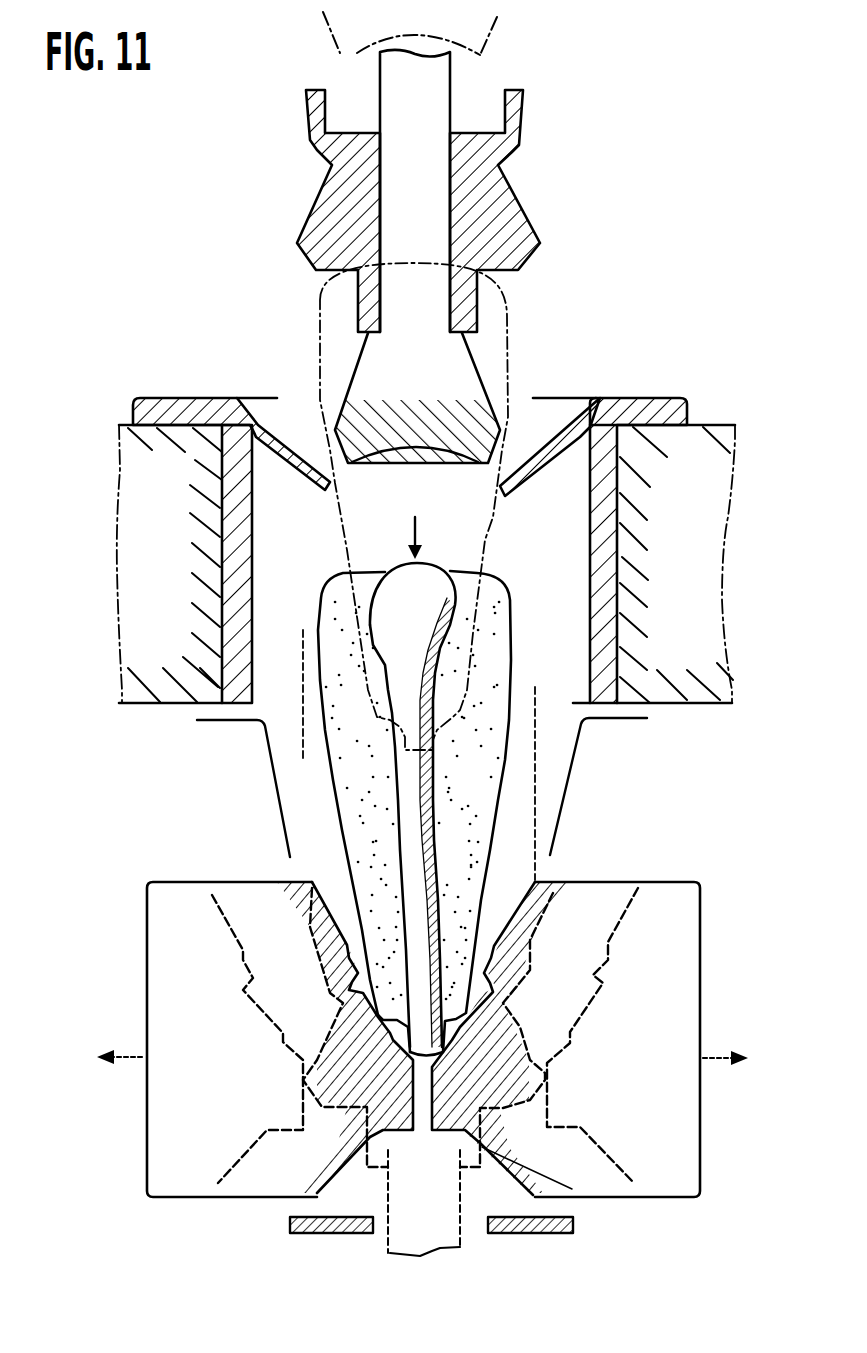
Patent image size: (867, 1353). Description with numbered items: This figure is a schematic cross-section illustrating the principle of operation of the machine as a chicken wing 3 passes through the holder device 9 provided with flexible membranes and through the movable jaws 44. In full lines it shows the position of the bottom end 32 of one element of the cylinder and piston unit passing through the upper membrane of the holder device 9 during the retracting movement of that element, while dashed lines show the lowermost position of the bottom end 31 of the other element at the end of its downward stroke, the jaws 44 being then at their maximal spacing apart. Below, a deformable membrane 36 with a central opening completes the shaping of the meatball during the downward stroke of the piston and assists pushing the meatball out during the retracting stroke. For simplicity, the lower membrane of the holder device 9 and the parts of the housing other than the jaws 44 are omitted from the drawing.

The wing 3 is at (363, 805).
The holder device 9 is at (633, 398).
The bottom end of element 17 31 is at (308, 223).
The bottom end of element 18 32 is at (370, 390).
The deformable membrane 36 is at (533, 1232).
The jaws 44 is at (165, 945).